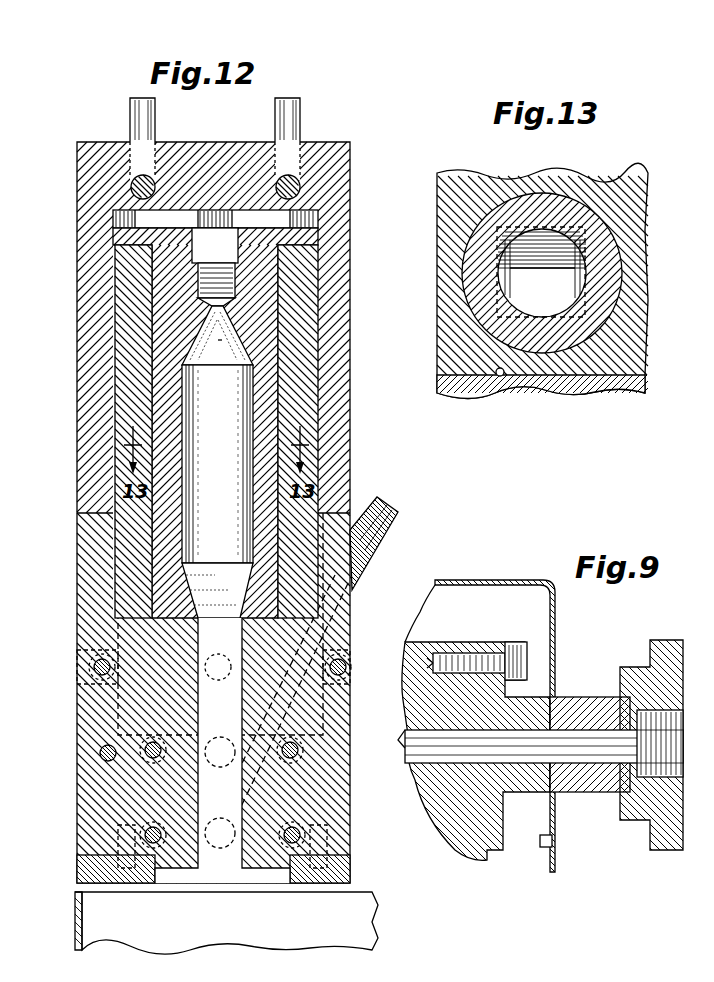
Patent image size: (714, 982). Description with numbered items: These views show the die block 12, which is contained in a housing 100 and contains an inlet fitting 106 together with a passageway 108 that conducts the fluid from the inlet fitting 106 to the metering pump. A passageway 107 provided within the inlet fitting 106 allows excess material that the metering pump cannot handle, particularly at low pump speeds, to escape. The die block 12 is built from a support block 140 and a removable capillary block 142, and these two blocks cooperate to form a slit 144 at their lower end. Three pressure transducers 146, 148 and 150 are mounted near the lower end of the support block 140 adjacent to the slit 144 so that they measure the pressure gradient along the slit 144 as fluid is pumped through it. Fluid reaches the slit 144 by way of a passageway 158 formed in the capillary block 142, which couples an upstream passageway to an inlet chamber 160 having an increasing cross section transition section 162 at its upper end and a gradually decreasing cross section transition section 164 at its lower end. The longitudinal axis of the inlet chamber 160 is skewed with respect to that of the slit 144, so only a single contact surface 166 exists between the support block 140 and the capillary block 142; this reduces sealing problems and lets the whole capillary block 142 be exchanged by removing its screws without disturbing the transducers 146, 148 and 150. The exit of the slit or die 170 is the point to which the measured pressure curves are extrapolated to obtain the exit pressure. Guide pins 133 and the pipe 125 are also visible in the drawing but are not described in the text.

In FIG. 12, the die block 12 is at (340, 106).
In FIG. 9, the die block 12 is at (457, 879).
In FIG. 9, the housing 100 is at (492, 586).
In FIG. 9, the inlet fitting 106 is at (622, 670).
In FIG. 9, the passageway 107 is at (592, 775).
In FIG. 9, the passageway 108 is at (416, 770).
In FIG. 12, the supply pipe 125 is at (398, 520).
In FIG. 12, the guide pins 133 is at (130, 116).
In FIG. 12, the support block 140 is at (95, 777).
In FIG. 13, the support block 140 is at (630, 386).
In FIG. 9, the support block 140 is at (460, 838).
In FIG. 12, the capillary block 142 is at (86, 215).
In FIG. 13, the capillary block 142 is at (630, 192).
In FIG. 12, the slit 144 is at (252, 870).
In FIG. 13, the slit 144 is at (537, 248).
In FIG. 12, the pressure transducer 146 is at (238, 636).
In FIG. 12, the pressure transducer 148 is at (220, 738).
In FIG. 12, the pressure transducer 150 is at (222, 850).
In FIG. 12, the passageway 158 is at (218, 348).
In FIG. 12, the inlet chamber 160 is at (192, 417).
In FIG. 13, the inlet chamber 160 is at (550, 300).
In FIG. 12, the transition section 162 is at (203, 347).
In FIG. 12, the transition section 164 is at (195, 580).
In FIG. 13, the transition section 164 is at (525, 252).
In FIG. 13, the contact surface 166 is at (500, 378).
In FIG. 12, the die 170 is at (205, 874).